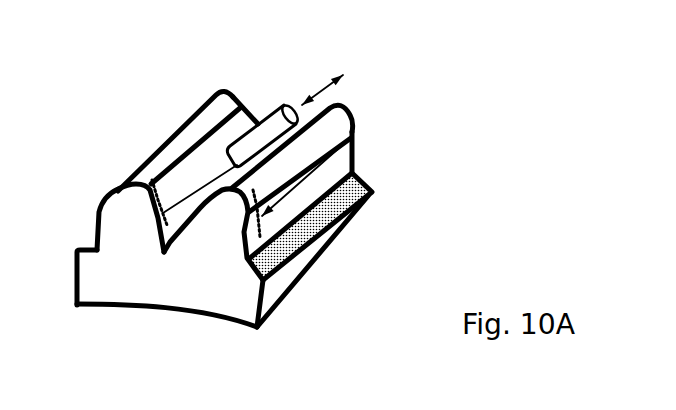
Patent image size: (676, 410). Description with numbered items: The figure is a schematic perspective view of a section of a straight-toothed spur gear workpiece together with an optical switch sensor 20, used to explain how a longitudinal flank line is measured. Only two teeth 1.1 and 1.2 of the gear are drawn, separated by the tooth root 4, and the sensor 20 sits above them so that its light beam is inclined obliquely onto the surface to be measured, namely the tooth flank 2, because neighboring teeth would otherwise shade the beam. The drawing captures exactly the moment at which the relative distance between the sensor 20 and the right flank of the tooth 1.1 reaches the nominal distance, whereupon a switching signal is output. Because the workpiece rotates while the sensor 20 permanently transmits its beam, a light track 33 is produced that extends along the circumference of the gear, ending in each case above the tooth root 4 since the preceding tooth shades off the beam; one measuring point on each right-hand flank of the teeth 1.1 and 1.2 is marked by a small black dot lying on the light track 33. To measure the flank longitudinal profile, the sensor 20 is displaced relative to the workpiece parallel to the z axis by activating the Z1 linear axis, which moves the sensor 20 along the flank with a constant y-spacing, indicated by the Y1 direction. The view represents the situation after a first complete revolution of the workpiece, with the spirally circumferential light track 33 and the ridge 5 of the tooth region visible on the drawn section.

The tooth flank 2 is at (312, 185).
The tooth 1.1 is at (128, 227).
The tooth 1.2 is at (224, 230).
The ridge 5 is at (215, 100).
The light track 33 is at (142, 183).
The tooth root 4 is at (181, 247).
The optical switch sensor 20 is at (268, 104).
The direction Y1 is at (345, 79).
The Z1 linear axis Z1 is at (348, 141).